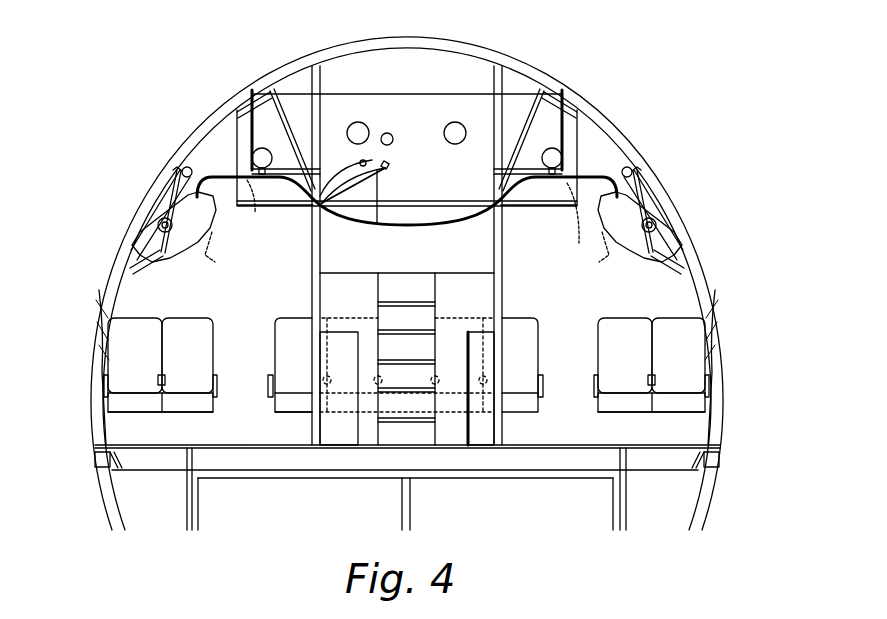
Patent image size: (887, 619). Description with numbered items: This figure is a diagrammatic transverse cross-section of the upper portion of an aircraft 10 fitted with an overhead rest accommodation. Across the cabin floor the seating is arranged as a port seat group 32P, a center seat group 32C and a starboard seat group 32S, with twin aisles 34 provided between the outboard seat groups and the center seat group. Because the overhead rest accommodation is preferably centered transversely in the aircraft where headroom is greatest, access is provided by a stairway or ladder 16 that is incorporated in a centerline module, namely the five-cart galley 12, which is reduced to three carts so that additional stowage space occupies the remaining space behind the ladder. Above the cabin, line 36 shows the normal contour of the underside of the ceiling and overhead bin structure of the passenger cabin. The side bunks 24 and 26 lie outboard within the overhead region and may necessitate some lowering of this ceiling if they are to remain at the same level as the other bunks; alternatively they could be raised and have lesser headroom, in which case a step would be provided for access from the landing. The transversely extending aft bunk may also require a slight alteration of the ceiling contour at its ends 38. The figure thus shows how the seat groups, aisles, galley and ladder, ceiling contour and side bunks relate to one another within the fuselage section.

The aircraft fuselage cross-section 10 is at (389, 80).
The five-cart galley 12 is at (298, 288).
The stairway or ladder 16 is at (408, 283).
The side bunk 24 is at (239, 167).
The side bunk 26 is at (577, 147).
The starboard seat group 32S is at (120, 426).
The port seat group 32P is at (686, 424).
The center seat group 32C is at (292, 432).
The aisles 34 is at (235, 356).
The line showing normal ceiling contour 36 is at (332, 215).
The ends 38 is at (297, 205).